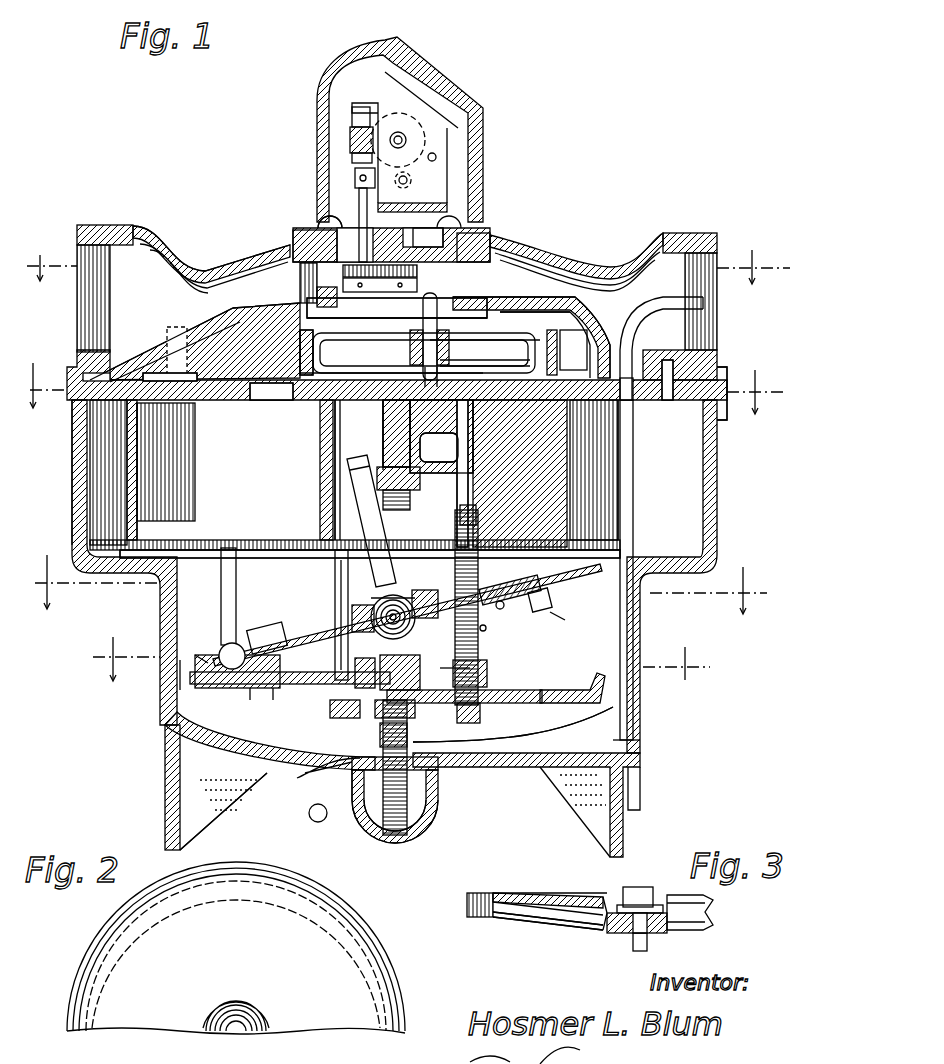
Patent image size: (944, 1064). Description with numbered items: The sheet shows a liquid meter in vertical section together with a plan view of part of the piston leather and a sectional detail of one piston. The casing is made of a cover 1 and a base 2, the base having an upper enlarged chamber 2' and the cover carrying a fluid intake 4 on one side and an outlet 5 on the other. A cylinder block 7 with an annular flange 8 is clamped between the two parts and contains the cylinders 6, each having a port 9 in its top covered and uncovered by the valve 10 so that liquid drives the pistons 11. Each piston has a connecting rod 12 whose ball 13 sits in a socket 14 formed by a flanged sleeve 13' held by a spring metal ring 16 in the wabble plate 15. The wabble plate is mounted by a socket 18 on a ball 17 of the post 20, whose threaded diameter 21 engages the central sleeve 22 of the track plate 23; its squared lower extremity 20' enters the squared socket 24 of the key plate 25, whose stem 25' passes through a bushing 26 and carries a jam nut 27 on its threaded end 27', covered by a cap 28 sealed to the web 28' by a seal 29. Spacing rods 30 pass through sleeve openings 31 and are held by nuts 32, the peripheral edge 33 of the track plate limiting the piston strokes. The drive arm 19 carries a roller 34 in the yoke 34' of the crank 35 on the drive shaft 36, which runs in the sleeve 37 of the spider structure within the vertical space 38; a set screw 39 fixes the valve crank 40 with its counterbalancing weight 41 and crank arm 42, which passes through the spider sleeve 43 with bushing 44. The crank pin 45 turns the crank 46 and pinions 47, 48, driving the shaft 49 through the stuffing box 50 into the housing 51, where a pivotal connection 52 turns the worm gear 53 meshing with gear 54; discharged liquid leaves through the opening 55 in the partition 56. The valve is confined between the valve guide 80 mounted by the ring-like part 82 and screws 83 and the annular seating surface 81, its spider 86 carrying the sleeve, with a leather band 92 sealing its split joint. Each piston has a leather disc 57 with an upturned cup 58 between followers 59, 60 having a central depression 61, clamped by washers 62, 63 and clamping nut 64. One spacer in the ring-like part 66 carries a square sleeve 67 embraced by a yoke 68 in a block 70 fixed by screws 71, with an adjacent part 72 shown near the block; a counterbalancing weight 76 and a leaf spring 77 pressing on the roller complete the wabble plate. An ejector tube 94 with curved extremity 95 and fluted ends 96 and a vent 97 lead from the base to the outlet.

In FIG. 1, the cover 1 is at (215, 252).
In FIG. 1, the base 2 is at (50, 472).
In FIG. 1, the upper enlarged chamber 2' is at (75, 472).
In FIG. 1, the fluid intake 4 is at (97, 286).
In FIG. 1, the outlet 5 is at (705, 330).
In FIG. 1, the cylinders 6 is at (648, 515).
In FIG. 1, the cylinder block 7 is at (520, 473).
In FIG. 1, the annular flange 8 is at (730, 410).
In FIG. 1, the port 9 is at (278, 396).
In FIG. 1, the valve 10 is at (258, 384).
In FIG. 1, the pistons 11 is at (244, 546).
In FIG. 1, the connecting rod 12 is at (343, 571).
In FIG. 3, the connecting rod 12 is at (648, 946).
In FIG. 1, the ball 13 is at (215, 639).
In FIG. 1, the flanged sleeve or bushing 13' is at (199, 665).
In FIG. 1, the socket 14 is at (250, 700).
In FIG. 1, the wabble plate 15 is at (208, 665).
In FIG. 1, the spring metal ring 16 is at (273, 700).
In FIG. 1, the ball 17 is at (395, 614).
In FIG. 1, the socket 18 is at (395, 585).
In FIG. 1, the drive arm 19 is at (378, 528).
In FIG. 1, the post 20 is at (397, 267).
In FIG. 1, the lower extremity of post 20' is at (385, 668).
In FIG. 1, the enlarged threaded diameter 21 is at (385, 712).
In FIG. 1, the central sleeve 22 is at (359, 673).
In FIG. 1, the track plate 23 is at (510, 700).
In FIG. 1, the squared socket 24 is at (408, 736).
In FIG. 1, the key plate 25 is at (415, 747).
In FIG. 1, the key-like stem 25' is at (431, 775).
In FIG. 1, the bushing 26 is at (328, 770).
In FIG. 1, the jam nut 27 is at (421, 806).
In FIG. 1, the threaded end 27' is at (388, 825).
In FIG. 1, the cap 28 is at (412, 820).
In FIG. 1, the web portion 28' is at (223, 811).
In FIG. 1, the seal 29 is at (318, 822).
In FIG. 1, the spacing rods 30 is at (316, 606).
In FIG. 1, the sleeve openings 31 is at (462, 690).
In FIG. 1, the nuts 32 is at (462, 722).
In FIG. 1, the peripheral edge 33 is at (585, 675).
In FIG. 1, the roller 34 is at (351, 483).
In FIG. 1, the yoke or bifurcation 34' is at (347, 505).
In FIG. 1, the crank 35 is at (439, 452).
In FIG. 1, the drive shaft 36 is at (396, 433).
In FIG. 1, the elongated sleeve 37 is at (335, 438).
In FIG. 1, the vertical space 38 is at (450, 450).
In FIG. 1, the set screw 39 is at (378, 356).
In FIG. 1, the valve crank 40 is at (394, 371).
In FIG. 1, the counterbalancing weight 41 is at (297, 374).
In FIG. 1, the crank arm 42 is at (545, 360).
In FIG. 1, the spider sleeve 43 is at (432, 340).
In FIG. 1, the bushing 44 is at (465, 287).
In FIG. 1, the crank pin 45 is at (448, 325).
In FIG. 1, the crank 46 is at (425, 300).
In FIG. 1, the pinion 47 is at (412, 274).
In FIG. 1, the pinion 48 is at (363, 275).
In FIG. 1, the drive shaft 49 is at (362, 200).
In FIG. 1, the stuffing box 50 is at (327, 225).
In FIG. 1, the cap-like housing 51 is at (320, 144).
In FIG. 1, the pivotal driving connection 52 is at (355, 178).
In FIG. 1, the worm gear 53 is at (350, 133).
In FIG. 1, the gear 54 is at (403, 150).
In FIG. 1, the opening 55 is at (300, 252).
In FIG. 1, the partition 56 is at (585, 305).
In FIG. 3, the leather disc 57 is at (582, 918).
In FIG. 1, the upturned annular flange or cup 58 is at (188, 536).
In FIG. 2, the upturned annular flange or cup 58 is at (395, 942).
In FIG. 3, the upturned annular flange or cup 58 is at (497, 893).
In FIG. 2, the upper follower 59 is at (315, 920).
In FIG. 3, the upper follower 59 is at (560, 900).
In FIG. 3, the lower follower 60 is at (542, 925).
In FIG. 2, the central depression 61 is at (266, 1004).
In FIG. 3, the central depression 61 is at (612, 936).
In FIG. 3, the bottom washer 62 is at (622, 936).
In FIG. 3, the washer 63 is at (655, 905).
In FIG. 3, the clamping nut 64 is at (637, 887).
In FIG. 1, the ring-like part 66 is at (332, 708).
In FIG. 1, the square sleeve 67 is at (470, 668).
In FIG. 1, the yoke 68 is at (486, 630).
In FIG. 1, the block 70 is at (558, 620).
In FIG. 1, the screws 71 is at (480, 593).
In FIG. 1, the clamp 72 is at (578, 583).
In FIG. 1, the counterbalancing weight 76 is at (290, 625).
In FIG. 1, the leaf spring 77 is at (402, 522).
In FIG. 1, the valve guide 80 is at (258, 320).
In FIG. 1, the annular seating surface 81 is at (230, 386).
In FIG. 1, the ring-like part 82 is at (522, 302).
In FIG. 1, the screws 83 is at (305, 314).
In FIG. 1, the spider 86 is at (485, 373).
In FIG. 1, the band of flexible material 92 is at (305, 352).
In FIG. 1, the ejector tube 94 is at (633, 472).
In FIG. 1, the curved extremity 95 is at (680, 303).
In FIG. 1, the fluted ends 96 is at (628, 375).
In FIG. 1, the vent 97 is at (672, 376).